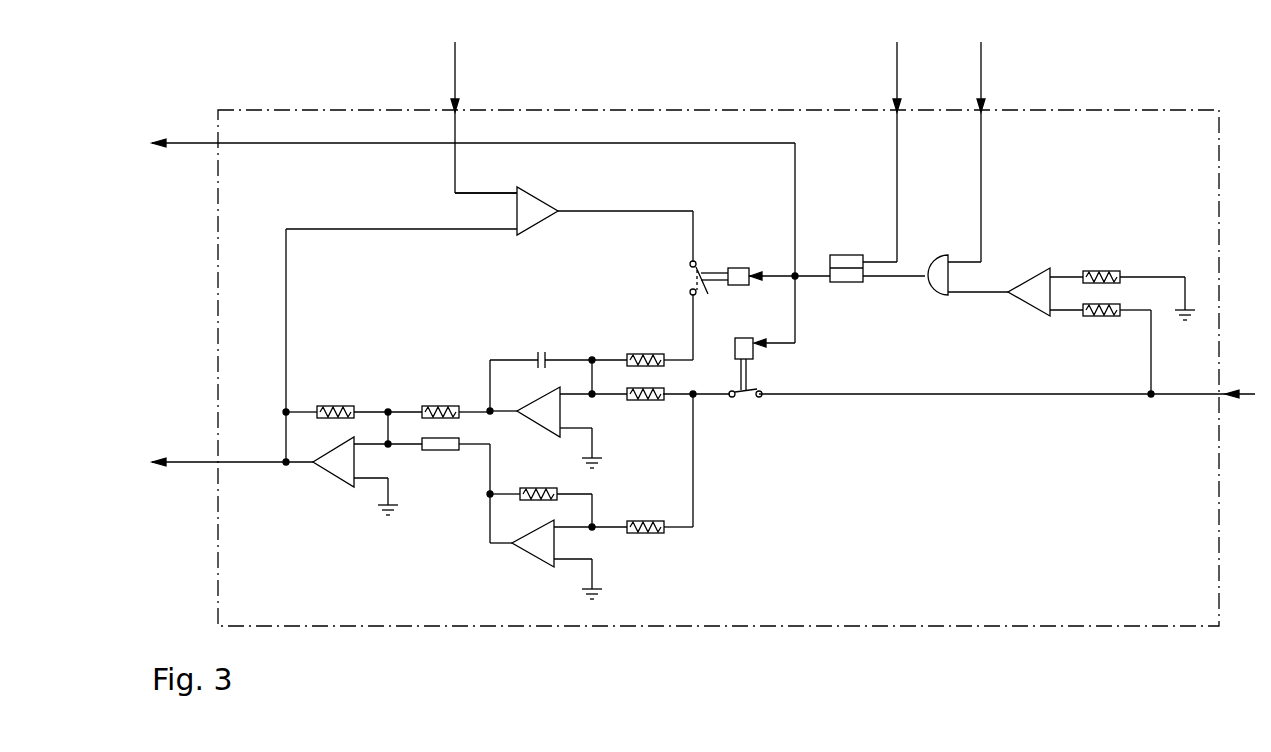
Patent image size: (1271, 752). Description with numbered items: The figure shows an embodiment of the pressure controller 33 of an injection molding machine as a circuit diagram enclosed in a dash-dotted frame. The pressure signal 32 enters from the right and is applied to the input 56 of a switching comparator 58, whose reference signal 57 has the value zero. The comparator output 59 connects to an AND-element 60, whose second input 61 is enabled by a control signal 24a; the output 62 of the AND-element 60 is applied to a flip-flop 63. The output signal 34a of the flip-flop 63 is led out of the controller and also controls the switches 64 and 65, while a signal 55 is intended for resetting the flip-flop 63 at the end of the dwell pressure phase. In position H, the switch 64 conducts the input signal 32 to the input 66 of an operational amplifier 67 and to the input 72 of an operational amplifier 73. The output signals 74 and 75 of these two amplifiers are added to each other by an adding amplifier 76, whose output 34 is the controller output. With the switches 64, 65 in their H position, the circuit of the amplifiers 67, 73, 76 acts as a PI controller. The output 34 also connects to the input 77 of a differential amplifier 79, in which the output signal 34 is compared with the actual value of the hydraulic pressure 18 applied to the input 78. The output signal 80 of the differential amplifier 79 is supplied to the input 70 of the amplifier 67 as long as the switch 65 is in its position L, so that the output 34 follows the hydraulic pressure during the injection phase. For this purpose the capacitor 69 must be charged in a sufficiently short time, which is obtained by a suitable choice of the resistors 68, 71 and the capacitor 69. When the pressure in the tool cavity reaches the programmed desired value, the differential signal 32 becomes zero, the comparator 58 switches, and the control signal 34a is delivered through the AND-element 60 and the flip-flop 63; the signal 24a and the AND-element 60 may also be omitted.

The hydraulic pressure signal 18 is at (457, 88).
The control signal 24a is at (983, 62).
The pressure signal 32 is at (1243, 396).
The controller 33 is at (1147, 627).
The output 34 is at (174, 464).
The output signal of the flip-flop 34a is at (188, 144).
The signal 55 is at (895, 66).
The input 56 is at (1138, 312).
The reference signal 57 is at (1145, 270).
The switching comparator 58 is at (1022, 303).
The comparator output 59 is at (976, 293).
The AND-element 60 is at (940, 296).
The second input 61 is at (982, 240).
The output 62 is at (905, 278).
The flip-flop 63 is at (853, 255).
The switch 64 is at (745, 399).
The switch 65 is at (698, 268).
The input 66 is at (682, 398).
The operational amplifier 67 is at (541, 426).
The resistor 68 is at (641, 402).
The capacitor 69 is at (546, 352).
The input 70 is at (668, 353).
The resistor 71 is at (630, 353).
The input 72 is at (686, 530).
The operational amplifier 73 is at (531, 556).
The output signal 74 is at (493, 548).
The output signal 75 is at (498, 416).
The adding amplifier 76 is at (329, 470).
The input 77 is at (458, 230).
The input 78 is at (468, 190).
The differential amplifier 79 is at (540, 223).
The output signal 80 is at (596, 211).